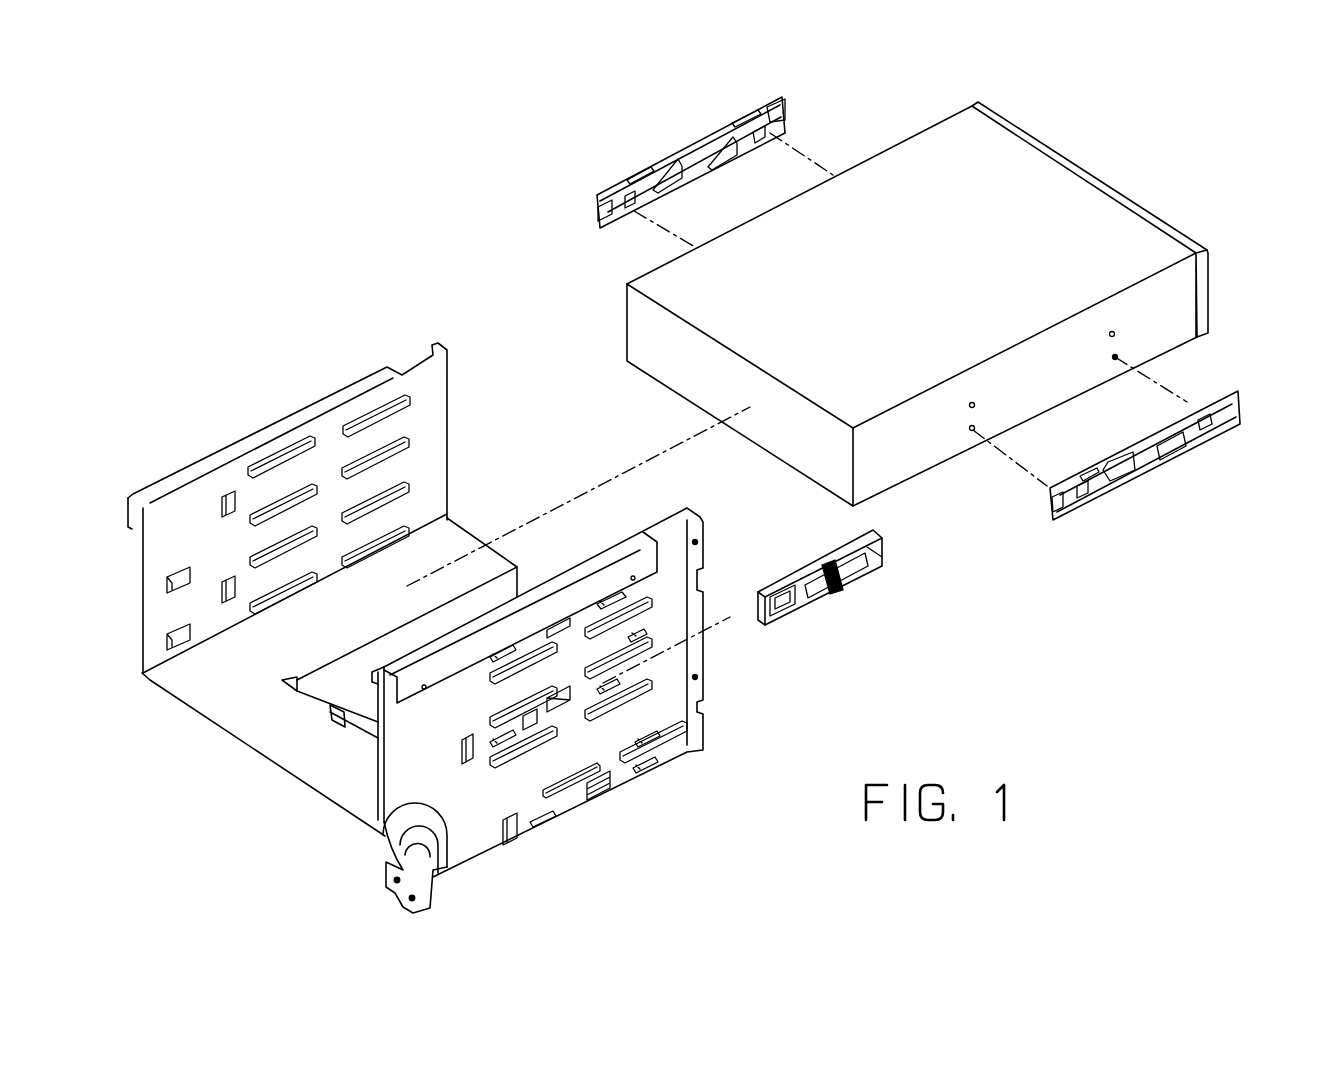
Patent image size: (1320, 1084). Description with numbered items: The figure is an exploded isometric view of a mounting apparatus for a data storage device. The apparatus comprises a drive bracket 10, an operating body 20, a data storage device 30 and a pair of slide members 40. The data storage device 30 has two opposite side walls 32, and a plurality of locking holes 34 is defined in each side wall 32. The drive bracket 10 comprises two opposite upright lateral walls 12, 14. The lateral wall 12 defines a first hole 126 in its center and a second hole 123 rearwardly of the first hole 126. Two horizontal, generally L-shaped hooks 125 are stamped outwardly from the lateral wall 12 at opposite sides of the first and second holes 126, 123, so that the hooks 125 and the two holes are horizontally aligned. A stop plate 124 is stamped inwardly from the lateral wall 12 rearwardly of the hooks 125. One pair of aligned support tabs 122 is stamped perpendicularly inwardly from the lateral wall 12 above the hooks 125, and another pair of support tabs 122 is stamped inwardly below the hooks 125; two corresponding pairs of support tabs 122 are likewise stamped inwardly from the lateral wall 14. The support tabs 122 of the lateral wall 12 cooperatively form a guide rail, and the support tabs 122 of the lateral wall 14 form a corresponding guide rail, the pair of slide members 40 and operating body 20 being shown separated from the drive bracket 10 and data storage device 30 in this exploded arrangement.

The drive bracket 10 is at (460, 469).
The lateral wall 12 is at (403, 759).
The lateral wall 14 is at (432, 411).
The operating body 20 is at (850, 583).
The data storage device 30 is at (1146, 177).
The side wall 32 is at (1170, 298).
The locking holes 34 is at (1118, 357).
The slide members 40 is at (777, 101).
The support tabs 122 is at (268, 503).
The second hole 123 is at (537, 731).
The stop plate 124 is at (472, 763).
The hooks 125 is at (637, 678).
The first hole 126 is at (566, 712).